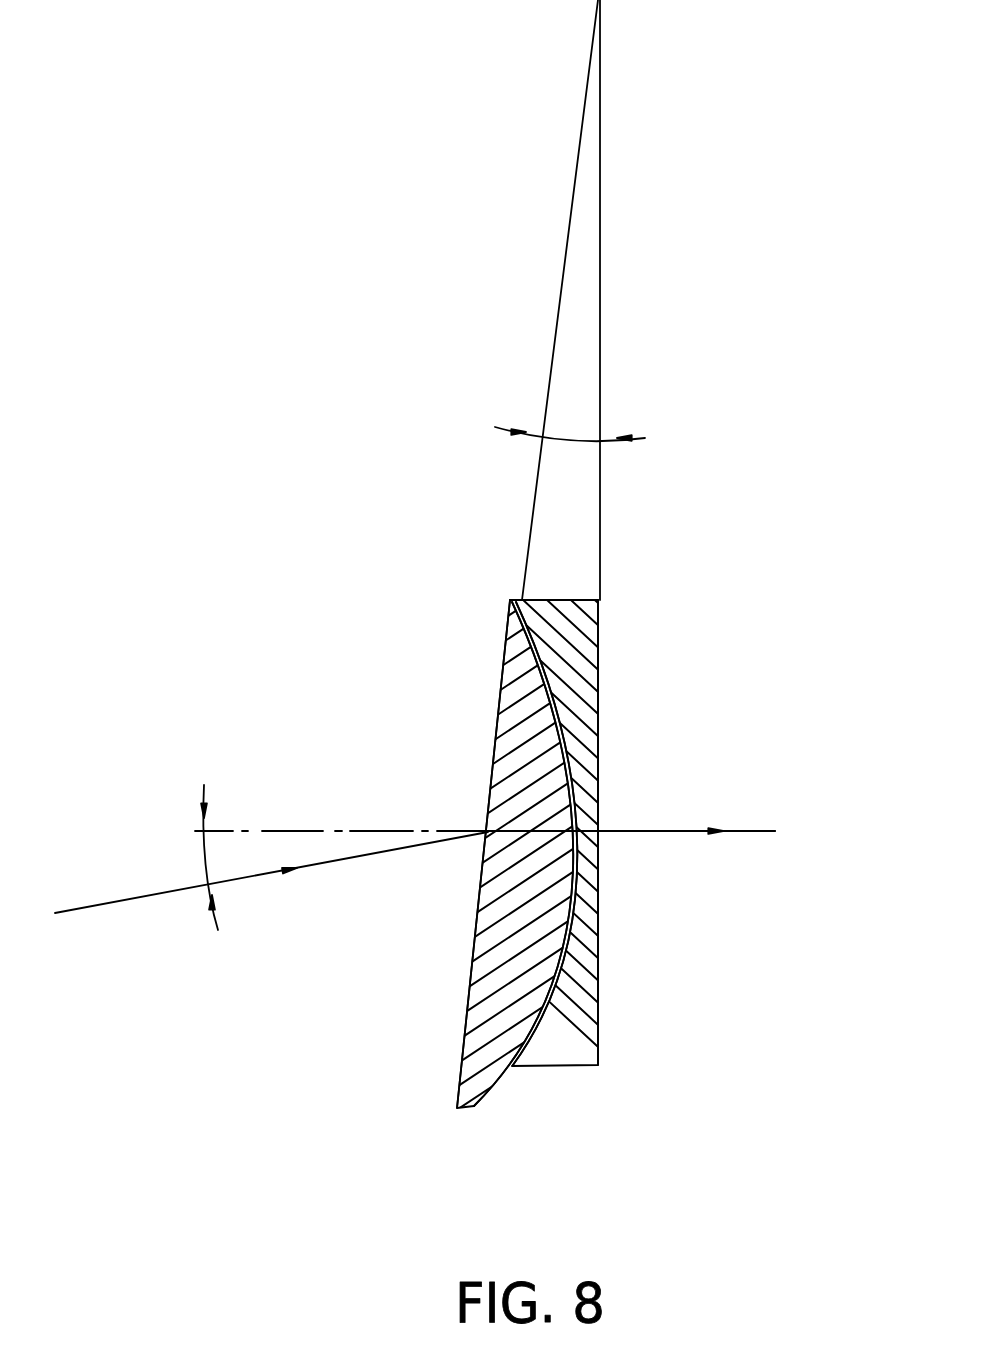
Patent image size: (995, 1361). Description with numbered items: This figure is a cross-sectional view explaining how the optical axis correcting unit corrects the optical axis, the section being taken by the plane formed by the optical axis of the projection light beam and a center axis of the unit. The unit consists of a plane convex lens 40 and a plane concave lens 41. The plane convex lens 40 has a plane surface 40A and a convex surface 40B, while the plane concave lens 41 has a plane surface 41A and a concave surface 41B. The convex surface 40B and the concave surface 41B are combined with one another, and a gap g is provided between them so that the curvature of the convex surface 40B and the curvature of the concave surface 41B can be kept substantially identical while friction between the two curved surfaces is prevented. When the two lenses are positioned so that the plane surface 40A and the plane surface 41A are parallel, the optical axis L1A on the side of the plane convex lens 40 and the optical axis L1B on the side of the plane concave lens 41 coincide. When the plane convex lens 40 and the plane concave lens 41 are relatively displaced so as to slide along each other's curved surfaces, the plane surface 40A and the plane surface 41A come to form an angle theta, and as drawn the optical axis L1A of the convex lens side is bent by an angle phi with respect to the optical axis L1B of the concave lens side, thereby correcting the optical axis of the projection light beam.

The plane convex lens 40 is at (502, 747).
The plane surface 40A is at (463, 1047).
The convex surface 40B is at (485, 1095).
The plane concave lens 41 is at (602, 725).
The plane surface 41A is at (598, 1002).
The concave surface 41B is at (527, 633).
The gap g is at (508, 1068).
The optical axis of the plane convex lens side L1A is at (115, 902).
The optical axis of the plane concave lens side L1B is at (735, 832).